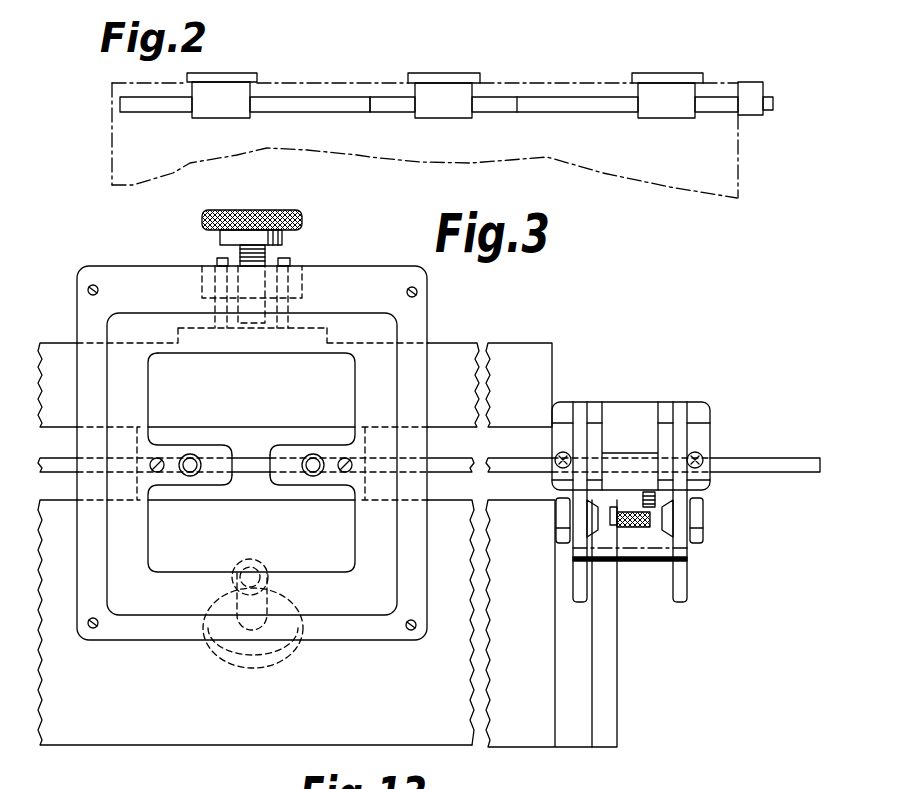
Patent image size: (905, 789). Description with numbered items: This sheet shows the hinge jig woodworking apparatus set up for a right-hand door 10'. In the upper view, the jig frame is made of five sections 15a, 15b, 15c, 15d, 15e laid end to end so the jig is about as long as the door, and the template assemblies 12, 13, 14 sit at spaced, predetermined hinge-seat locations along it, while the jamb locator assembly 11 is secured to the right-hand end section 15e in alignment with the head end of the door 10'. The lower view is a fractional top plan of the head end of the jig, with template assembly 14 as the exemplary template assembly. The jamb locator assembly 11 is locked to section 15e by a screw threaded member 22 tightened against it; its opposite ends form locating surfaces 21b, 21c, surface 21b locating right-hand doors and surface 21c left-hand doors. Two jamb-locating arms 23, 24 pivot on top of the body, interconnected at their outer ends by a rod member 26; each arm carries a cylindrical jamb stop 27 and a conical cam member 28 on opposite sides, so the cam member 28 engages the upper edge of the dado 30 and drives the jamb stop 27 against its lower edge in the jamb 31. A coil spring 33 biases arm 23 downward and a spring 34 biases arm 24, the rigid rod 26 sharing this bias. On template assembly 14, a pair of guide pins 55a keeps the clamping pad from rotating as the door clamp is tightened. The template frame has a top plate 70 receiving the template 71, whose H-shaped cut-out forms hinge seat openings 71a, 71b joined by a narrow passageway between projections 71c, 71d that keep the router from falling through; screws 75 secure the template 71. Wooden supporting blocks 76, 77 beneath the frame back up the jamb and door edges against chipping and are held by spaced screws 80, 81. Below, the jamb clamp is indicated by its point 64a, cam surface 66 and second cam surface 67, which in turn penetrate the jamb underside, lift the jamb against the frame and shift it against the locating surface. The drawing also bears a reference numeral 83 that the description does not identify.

In FIG. 2, the right-hand door 10' is at (425, 126).
In FIG. 3, the right-hand door 10' is at (519, 365).
In FIG. 2, the jamb locator assembly 11 is at (757, 83).
In FIG. 3, the jamb locator assembly 11 is at (680, 382).
In FIG. 2, the template assembly 12 is at (225, 118).
In FIG. 2, the template assembly 13 is at (450, 118).
In FIG. 2, the template assembly 14 is at (652, 118).
In FIG. 3, the template assembly 14 is at (368, 237).
In FIG. 2, the frame section 15a is at (170, 113).
In FIG. 2, the frame section 15b is at (293, 97).
In FIG. 2, the frame section 15c is at (407, 113).
In FIG. 2, the frame section 15d is at (598, 113).
In FIG. 2, the frame section 15e is at (717, 113).
In FIG. 3, the frame section 15e is at (797, 474).
In FIG. 3, the locating surface 21b is at (560, 400).
In FIG. 3, the locating surface 21c is at (711, 415).
In FIG. 3, the screw threaded member 22 is at (627, 512).
In FIG. 3, the jamb-locating arm 23 is at (592, 401).
In FIG. 3, the jamb-locating arm 24 is at (690, 401).
In FIG. 3, the rod member 26 is at (632, 561).
In FIG. 3, the cylindrical jamb stop 27 is at (558, 517).
In FIG. 3, the conical shaped cam member 28 is at (666, 528).
In FIG. 3, the dado 30 is at (580, 735).
In FIG. 3, the jamb 31 is at (540, 742).
In FIG. 3, the coil spring 33 is at (556, 457).
In FIG. 3, the spring 34 is at (702, 457).
In FIG. 3, the guide pins 55a is at (215, 259).
In FIG. 3, the point 64a is at (250, 562).
In FIG. 3, the cam surface 66 is at (265, 571).
In FIG. 3, the second cam surface 67 is at (272, 583).
In FIG. 3, the top plate 70 is at (372, 630).
In FIG. 3, the template 71 is at (138, 607).
In FIG. 3, the hinge seat opening 71a is at (150, 388).
In FIG. 3, the hinge seat opening 71b is at (152, 538).
In FIG. 3, the projection 71c is at (210, 452).
In FIG. 3, the projection 71d is at (297, 448).
In FIG. 3, the screws 75 is at (150, 466).
In FIG. 3, the wooden supporting block 76 is at (253, 495).
In FIG. 3, the wooden supporting block 77 is at (255, 437).
In FIG. 3, the screw 80 is at (195, 474).
In FIG. 3, the screw 81 is at (320, 474).
In FIG. 3, the table 83 is at (258, 566).